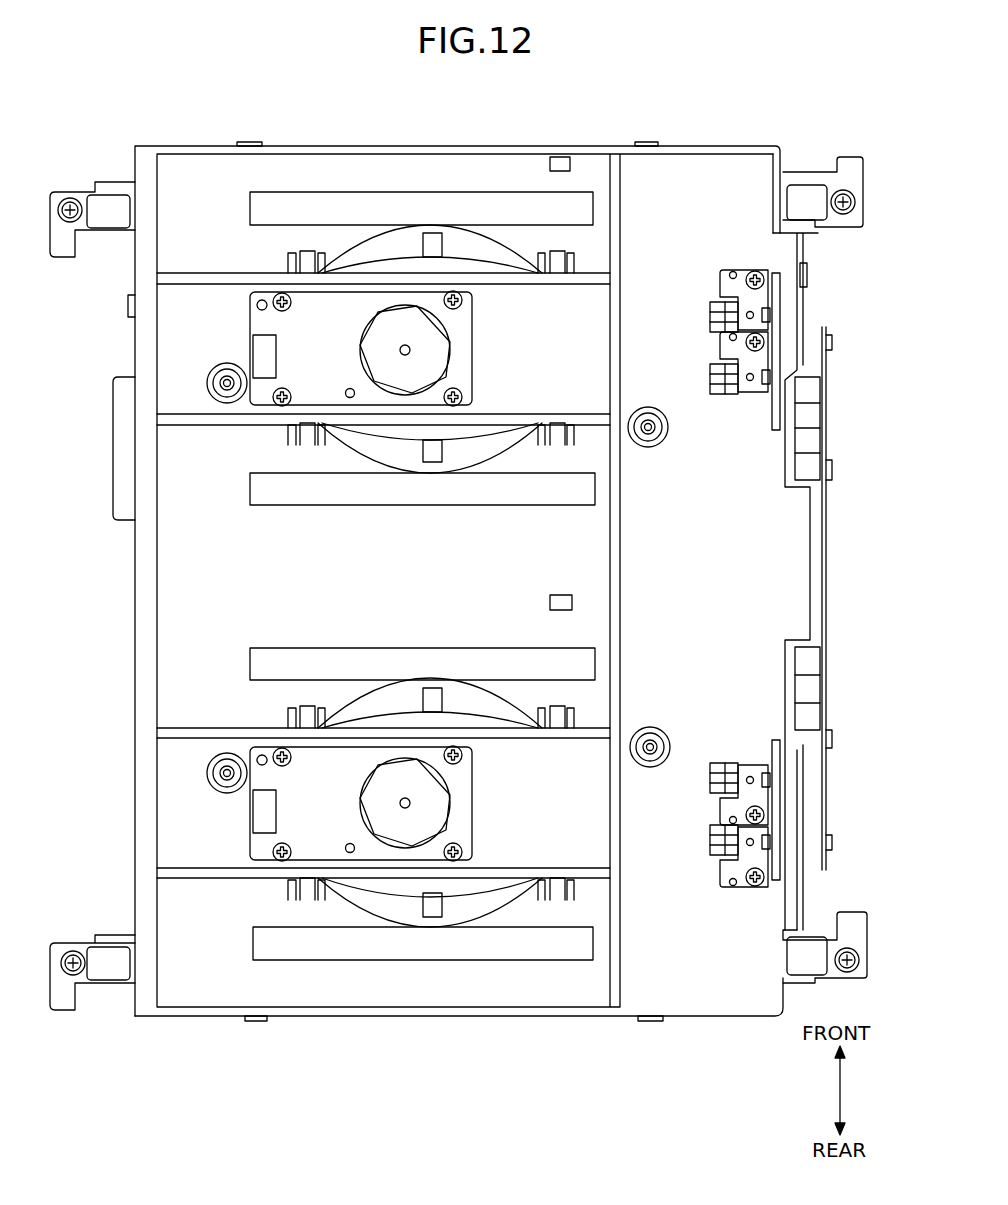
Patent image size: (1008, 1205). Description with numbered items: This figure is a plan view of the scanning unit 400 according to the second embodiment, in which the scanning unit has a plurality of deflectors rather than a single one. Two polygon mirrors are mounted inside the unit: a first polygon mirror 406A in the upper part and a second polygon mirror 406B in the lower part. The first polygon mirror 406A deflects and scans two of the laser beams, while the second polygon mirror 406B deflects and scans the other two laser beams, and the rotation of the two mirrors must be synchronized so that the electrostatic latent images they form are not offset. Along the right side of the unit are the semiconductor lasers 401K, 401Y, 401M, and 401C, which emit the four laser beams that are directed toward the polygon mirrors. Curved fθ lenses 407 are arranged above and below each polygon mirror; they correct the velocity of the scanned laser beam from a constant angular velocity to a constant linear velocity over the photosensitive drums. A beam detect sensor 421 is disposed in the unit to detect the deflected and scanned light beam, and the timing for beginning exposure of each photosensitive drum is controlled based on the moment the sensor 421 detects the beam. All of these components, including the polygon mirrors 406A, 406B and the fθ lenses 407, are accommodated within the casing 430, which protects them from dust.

The scanning unit 400 is at (303, 133).
The first polygon mirror 406A is at (385, 333).
The second polygon mirror 406B is at (385, 815).
The fθ lenses 407 is at (465, 243).
The beam detect (BD) sensor 421 is at (560, 158).
The casing 430 is at (725, 148).
The semiconductor laser 401K is at (768, 305).
The semiconductor laser 401Y is at (768, 393).
The semiconductor laser 401M is at (770, 750).
The semiconductor laser 401C is at (768, 858).